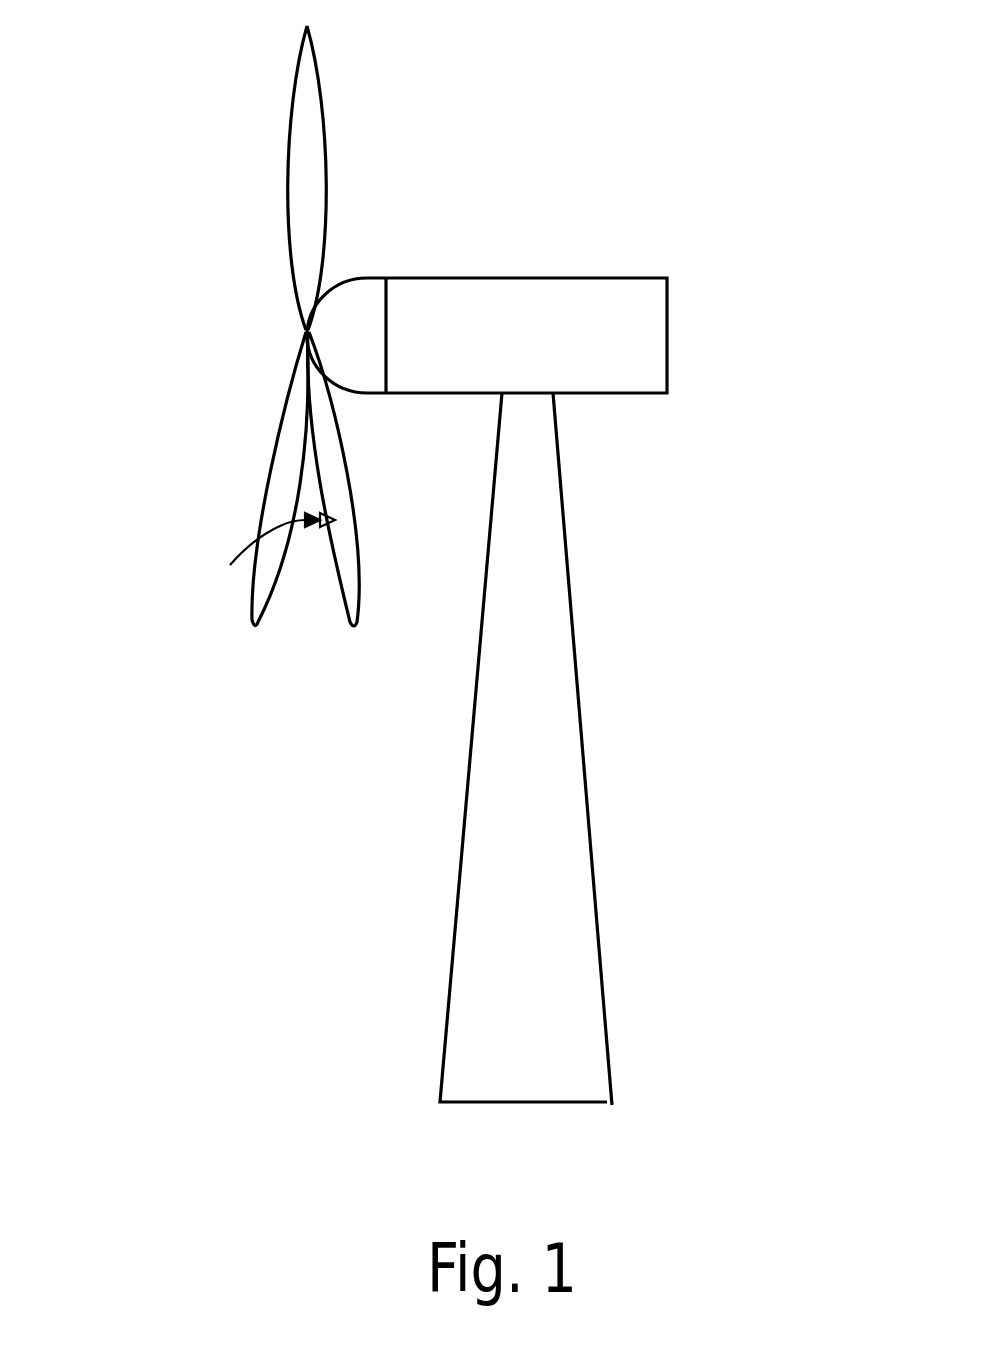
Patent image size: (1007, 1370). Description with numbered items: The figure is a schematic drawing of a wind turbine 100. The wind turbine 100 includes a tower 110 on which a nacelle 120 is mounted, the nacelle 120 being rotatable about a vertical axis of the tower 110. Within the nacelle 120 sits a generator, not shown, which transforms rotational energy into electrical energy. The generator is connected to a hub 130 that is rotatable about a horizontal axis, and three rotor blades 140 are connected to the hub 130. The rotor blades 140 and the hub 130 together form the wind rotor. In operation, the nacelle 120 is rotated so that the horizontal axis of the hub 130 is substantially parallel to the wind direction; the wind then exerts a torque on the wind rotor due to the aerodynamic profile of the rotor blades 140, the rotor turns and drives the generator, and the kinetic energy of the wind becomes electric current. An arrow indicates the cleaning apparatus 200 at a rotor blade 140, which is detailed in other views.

The wind turbine 100 is at (930, 101).
The tower 110 is at (586, 790).
The nacelle 120 is at (614, 335).
The hub 130 is at (363, 279).
The rotor blades 140 is at (288, 206).
The cleaning apparatus 200 is at (236, 553).